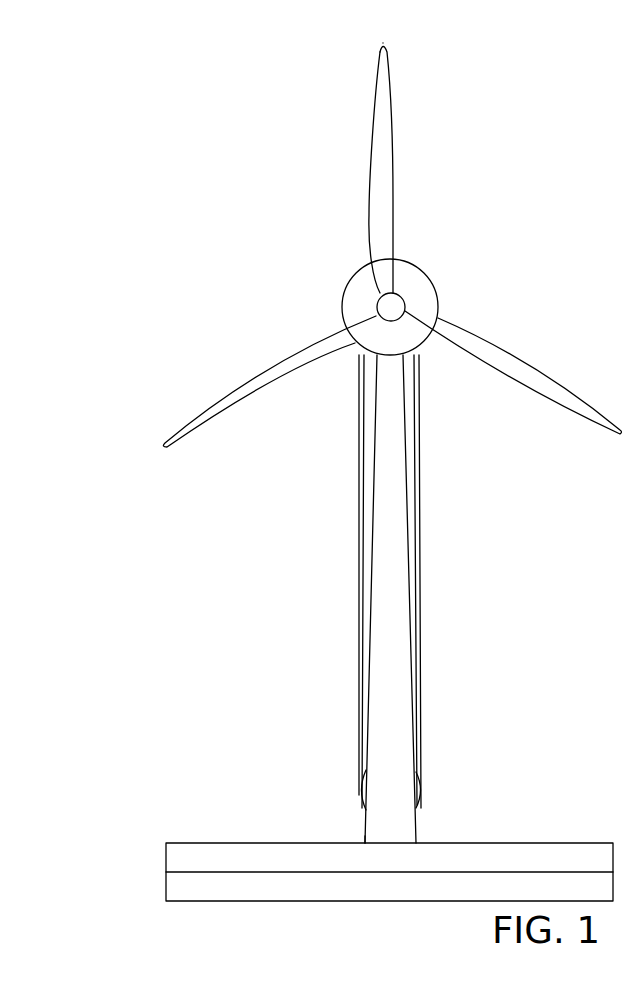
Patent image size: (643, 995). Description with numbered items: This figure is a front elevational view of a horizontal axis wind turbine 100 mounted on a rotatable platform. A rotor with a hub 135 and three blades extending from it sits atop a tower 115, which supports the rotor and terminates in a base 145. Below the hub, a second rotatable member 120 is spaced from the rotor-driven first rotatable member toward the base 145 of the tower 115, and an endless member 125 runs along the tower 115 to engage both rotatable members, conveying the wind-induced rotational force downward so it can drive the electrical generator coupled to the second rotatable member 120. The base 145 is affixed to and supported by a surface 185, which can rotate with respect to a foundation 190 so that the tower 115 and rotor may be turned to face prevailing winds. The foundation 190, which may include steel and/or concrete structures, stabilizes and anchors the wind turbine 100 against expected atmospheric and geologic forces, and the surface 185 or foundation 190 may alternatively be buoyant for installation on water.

The horizontal axis wind turbine 100 is at (211, 79).
The tower 115 is at (400, 489).
The second rotatable member 120 is at (422, 788).
The endless member 125 is at (420, 516).
The hub 135 is at (405, 299).
The base 145 is at (365, 840).
The surface 185 is at (197, 843).
The foundation 190 is at (166, 885).